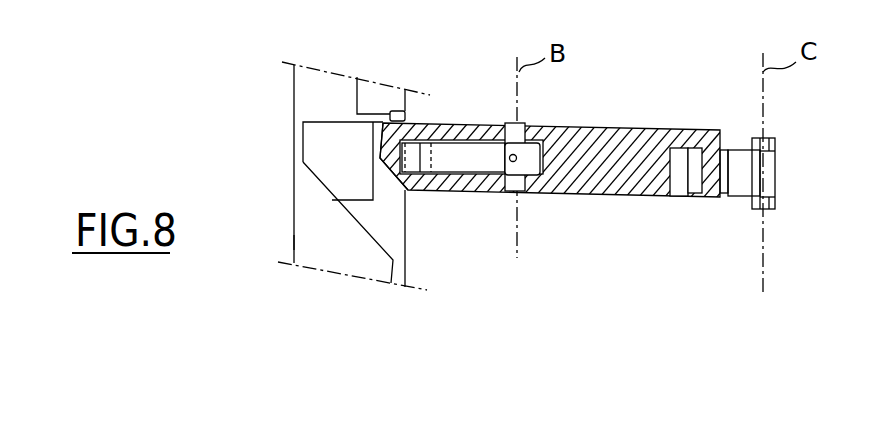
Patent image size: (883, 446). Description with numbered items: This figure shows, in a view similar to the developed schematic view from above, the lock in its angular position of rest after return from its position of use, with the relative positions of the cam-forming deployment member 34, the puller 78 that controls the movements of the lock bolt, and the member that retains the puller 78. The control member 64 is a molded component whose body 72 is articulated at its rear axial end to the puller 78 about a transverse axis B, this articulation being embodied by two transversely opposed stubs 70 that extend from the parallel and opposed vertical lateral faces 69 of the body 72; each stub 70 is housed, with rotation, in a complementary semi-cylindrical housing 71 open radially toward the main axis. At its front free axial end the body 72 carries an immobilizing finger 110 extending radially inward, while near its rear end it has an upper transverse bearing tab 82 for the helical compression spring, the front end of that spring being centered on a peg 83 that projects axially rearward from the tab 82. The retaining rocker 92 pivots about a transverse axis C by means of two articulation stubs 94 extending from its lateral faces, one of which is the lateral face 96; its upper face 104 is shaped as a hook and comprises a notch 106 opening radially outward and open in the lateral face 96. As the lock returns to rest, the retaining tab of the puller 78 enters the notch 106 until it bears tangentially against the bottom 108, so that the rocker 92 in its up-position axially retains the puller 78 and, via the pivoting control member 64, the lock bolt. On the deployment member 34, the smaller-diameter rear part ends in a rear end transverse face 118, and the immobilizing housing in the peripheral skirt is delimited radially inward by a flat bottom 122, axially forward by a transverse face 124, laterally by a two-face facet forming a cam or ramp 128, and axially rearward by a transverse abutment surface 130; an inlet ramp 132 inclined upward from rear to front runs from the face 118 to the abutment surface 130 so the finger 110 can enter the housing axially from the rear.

The deployment member 34 is at (288, 243).
The control member 64 is at (442, 176).
The lateral faces 69 is at (462, 190).
The stubs 70 is at (521, 192).
The semi-cylindrical housings 71 is at (534, 130).
The body 72 is at (487, 157).
The puller 78 is at (625, 196).
The bearing tab 82 is at (503, 172).
The peg 83 is at (584, 153).
The rocker 92 is at (731, 133).
The articulation stubs 94 is at (768, 140).
The lateral face 96 is at (733, 196).
The upper face 104 is at (748, 173).
The notch 106 is at (681, 150).
The bottom 108 is at (722, 198).
The immobilizing finger 110 is at (464, 119).
The rear end transverse face 118 is at (407, 268).
The flat bottom 122 is at (332, 200).
The transverse face 124 is at (307, 141).
The cam or ramp 128 is at (360, 222).
The transverse abutment surface 130 is at (383, 157).
The inlet ramp 132 is at (523, 132).